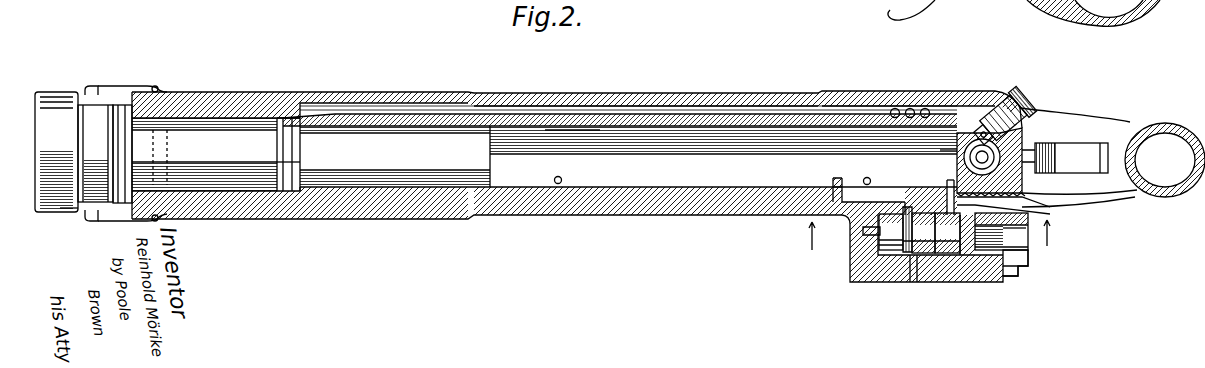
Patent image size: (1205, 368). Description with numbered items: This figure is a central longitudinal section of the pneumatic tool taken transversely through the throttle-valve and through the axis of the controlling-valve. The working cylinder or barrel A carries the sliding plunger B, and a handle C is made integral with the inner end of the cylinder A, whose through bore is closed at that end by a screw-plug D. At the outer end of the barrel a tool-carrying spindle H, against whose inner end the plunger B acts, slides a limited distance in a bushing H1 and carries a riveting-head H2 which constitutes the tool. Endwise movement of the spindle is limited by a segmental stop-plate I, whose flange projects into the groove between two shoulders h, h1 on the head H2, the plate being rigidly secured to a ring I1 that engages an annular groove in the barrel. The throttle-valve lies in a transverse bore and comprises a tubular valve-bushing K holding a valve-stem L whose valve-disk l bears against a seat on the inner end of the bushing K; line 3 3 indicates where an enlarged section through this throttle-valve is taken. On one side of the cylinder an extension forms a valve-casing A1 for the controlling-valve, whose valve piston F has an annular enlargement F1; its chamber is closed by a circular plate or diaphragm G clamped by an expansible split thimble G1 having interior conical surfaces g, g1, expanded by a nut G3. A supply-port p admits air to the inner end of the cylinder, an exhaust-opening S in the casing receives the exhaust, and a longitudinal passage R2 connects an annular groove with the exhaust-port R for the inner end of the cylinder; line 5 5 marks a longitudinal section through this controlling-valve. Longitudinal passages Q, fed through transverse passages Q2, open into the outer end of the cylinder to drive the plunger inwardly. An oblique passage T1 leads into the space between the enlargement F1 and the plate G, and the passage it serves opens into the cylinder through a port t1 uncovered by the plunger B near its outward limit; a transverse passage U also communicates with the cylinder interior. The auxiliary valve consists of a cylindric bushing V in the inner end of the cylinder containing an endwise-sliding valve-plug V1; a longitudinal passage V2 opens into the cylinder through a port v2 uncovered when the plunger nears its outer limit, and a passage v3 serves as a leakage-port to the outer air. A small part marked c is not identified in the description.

The riveting-head H2 is at (56, 152).
The shoulder h1 is at (95, 153).
The shoulder h is at (72, 212).
The valve-disk l is at (100, 93).
The ring I1 is at (170, 91).
The stop-plate I is at (120, 205).
The working cylinder or barrel A is at (576, 145).
The tool-carrying spindle H is at (204, 154).
The bushing H1 is at (256, 118).
The longitudinal passages Q is at (502, 110).
The sliding plunger B is at (395, 156).
The longitudinal passage V2 is at (753, 118).
The port v2 is at (558, 130).
The port t1 is at (562, 178).
The section line 3 is at (837, 152).
The exhaust-port R is at (833, 178).
The transverse passage U is at (884, 156).
The notch c is at (942, 147).
The oblique passage T1 is at (950, 181).
The transverse passages Q2 is at (898, 108).
The screw-plug D is at (1005, 150).
The valve-bushing V is at (1015, 115).
The valve-plug V1 is at (997, 110).
The passage v3 is at (978, 126).
The valve-stem L is at (1040, 127).
The valve-bushing K is at (1040, 157).
The handle C is at (1112, 157).
The interior conical surface g1 is at (1018, 196).
The longitudinal passage R2 is at (877, 240).
The section line 5 is at (820, 234).
The annular enlargement F1 is at (911, 258).
The exhaust-opening S is at (907, 255).
The supply-port p is at (930, 250).
The valve piston F is at (950, 206).
The valve-casing A1 is at (963, 268).
The circular plate or diaphragm G is at (982, 243).
The interior conical surface g is at (1046, 233).
The expansible split thimble G1 is at (1010, 276).
The nut G3 is at (1024, 266).